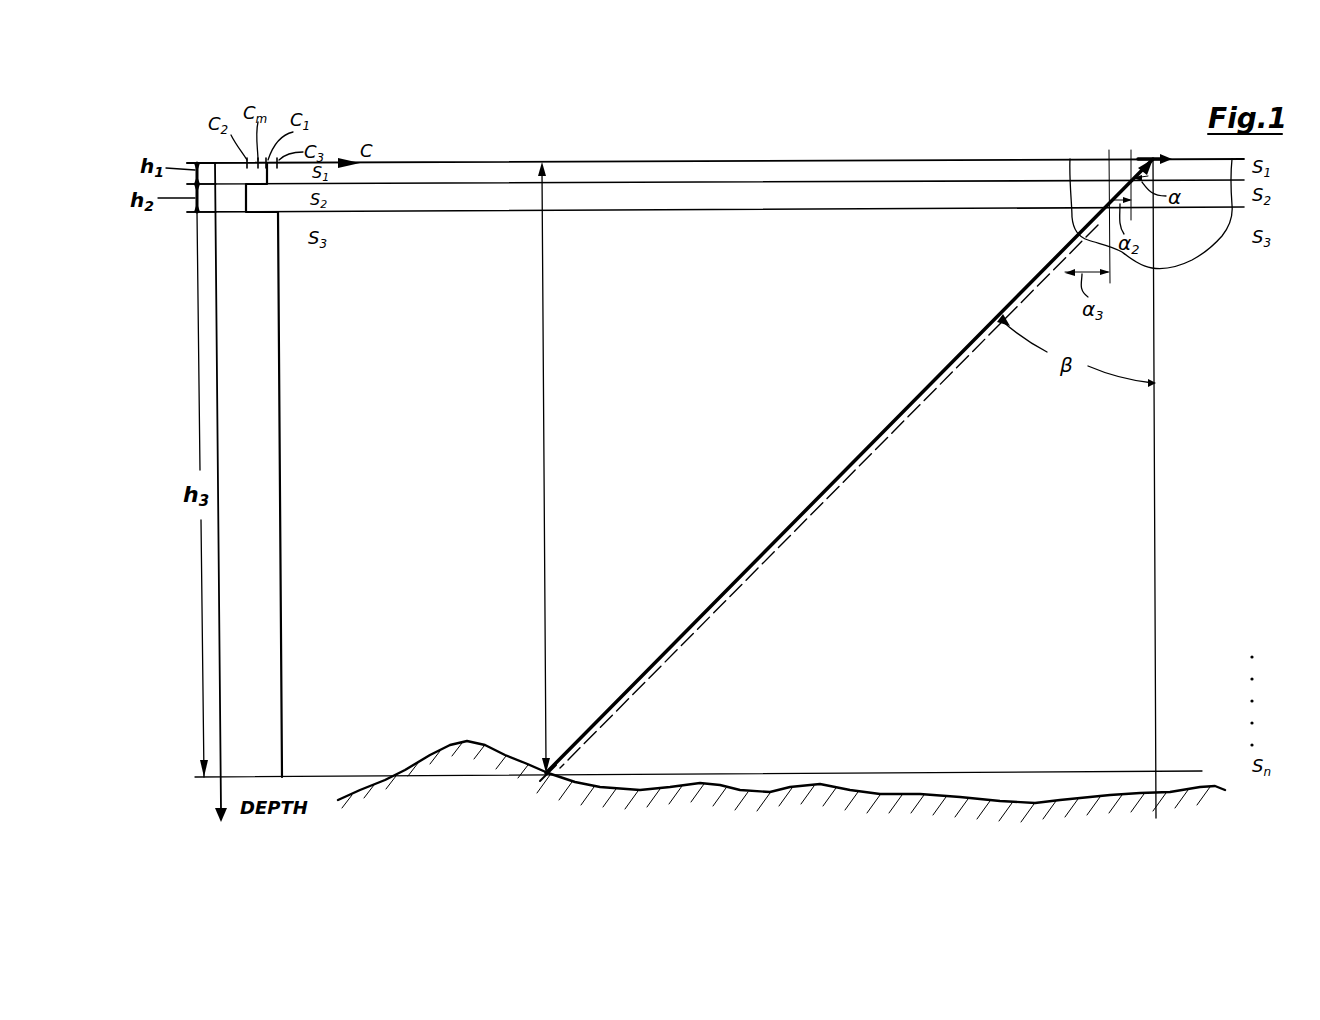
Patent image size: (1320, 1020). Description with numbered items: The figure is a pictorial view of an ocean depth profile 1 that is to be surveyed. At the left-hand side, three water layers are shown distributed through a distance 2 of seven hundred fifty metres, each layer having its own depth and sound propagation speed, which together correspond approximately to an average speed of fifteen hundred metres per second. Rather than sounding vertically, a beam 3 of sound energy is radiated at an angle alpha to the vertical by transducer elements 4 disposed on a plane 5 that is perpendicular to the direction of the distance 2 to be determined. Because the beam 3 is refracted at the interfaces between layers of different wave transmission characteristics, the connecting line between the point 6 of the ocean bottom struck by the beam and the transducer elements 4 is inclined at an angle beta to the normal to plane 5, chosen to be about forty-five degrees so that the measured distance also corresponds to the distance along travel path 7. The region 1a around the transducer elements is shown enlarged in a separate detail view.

The ocean depth profile 1 is at (1060, 798).
The region 1a is at (1197, 238).
The distance 2 is at (548, 452).
The beam of sound energy 3 is at (1129, 177).
The transducer elements 4 is at (1166, 164).
The plane 5 is at (1150, 156).
The point of the ocean bottom struck by the beam 6 is at (556, 771).
The travel path 7 is at (705, 162).